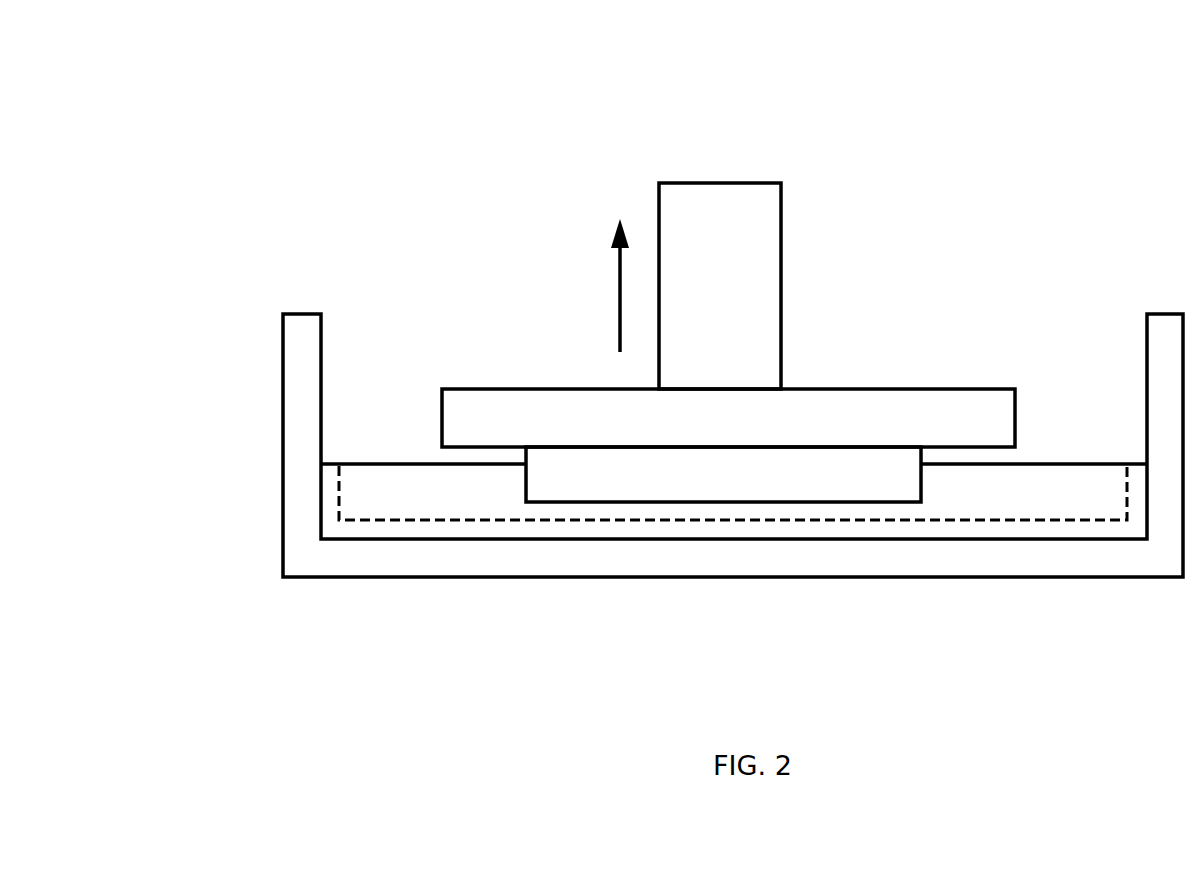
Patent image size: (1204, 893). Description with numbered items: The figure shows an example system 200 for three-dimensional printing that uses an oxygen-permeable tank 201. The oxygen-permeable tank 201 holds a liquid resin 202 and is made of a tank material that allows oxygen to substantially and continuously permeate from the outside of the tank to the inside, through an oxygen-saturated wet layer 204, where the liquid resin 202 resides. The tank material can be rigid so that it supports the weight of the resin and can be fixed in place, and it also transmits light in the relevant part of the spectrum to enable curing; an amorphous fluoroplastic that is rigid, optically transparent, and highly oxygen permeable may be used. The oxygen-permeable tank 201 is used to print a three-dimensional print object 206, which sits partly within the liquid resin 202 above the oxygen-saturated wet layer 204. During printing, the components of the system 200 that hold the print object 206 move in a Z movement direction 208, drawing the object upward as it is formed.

The system 200 is at (212, 99).
The oxygen-permeable tank 201 is at (695, 555).
The liquid resin 202 is at (1117, 517).
The oxygen-saturated wet layer 204 is at (762, 523).
The 3D print object 206 is at (910, 494).
The Z movement direction 208 is at (599, 329).